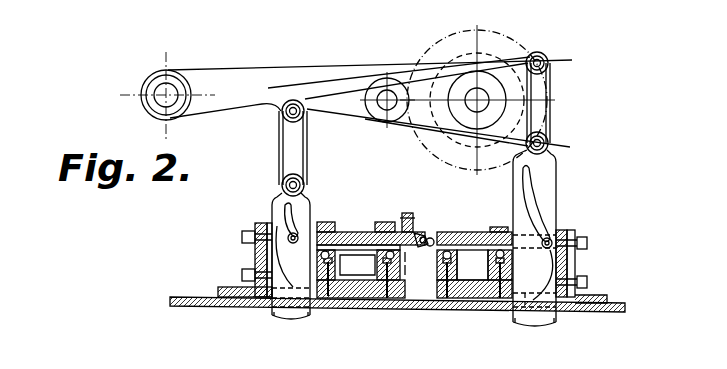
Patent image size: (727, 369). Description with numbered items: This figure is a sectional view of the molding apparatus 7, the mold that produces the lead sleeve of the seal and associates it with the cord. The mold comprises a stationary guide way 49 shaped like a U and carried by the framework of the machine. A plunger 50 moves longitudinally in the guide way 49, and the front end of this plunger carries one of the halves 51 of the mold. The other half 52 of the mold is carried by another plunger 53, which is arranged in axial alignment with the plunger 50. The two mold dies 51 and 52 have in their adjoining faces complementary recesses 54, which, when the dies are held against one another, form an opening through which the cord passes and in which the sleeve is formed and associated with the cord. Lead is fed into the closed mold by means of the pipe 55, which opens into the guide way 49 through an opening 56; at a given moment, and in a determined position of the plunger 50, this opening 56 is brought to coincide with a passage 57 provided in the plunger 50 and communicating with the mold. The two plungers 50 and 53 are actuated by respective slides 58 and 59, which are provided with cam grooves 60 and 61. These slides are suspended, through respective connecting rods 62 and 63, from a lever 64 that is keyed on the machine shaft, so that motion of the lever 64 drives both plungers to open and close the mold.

The molding apparatus 7 is at (425, 237).
The stationary guide way 49 is at (420, 236).
The plunger 50 is at (348, 235).
The mold half 51 is at (406, 256).
The mold half 52 is at (455, 232).
The plunger 53 is at (456, 243).
The complementary recesses 54 is at (432, 240).
The pipe 55 is at (163, 83).
The opening 56 is at (406, 270).
The passage 57 is at (421, 233).
The slide 58 is at (290, 317).
The slide 59 is at (533, 323).
The cam groove 60 is at (280, 206).
The cam groove 61 is at (560, 192).
The connecting rod 62 is at (297, 163).
The connecting rod 63 is at (543, 93).
The lever 64 is at (242, 70).